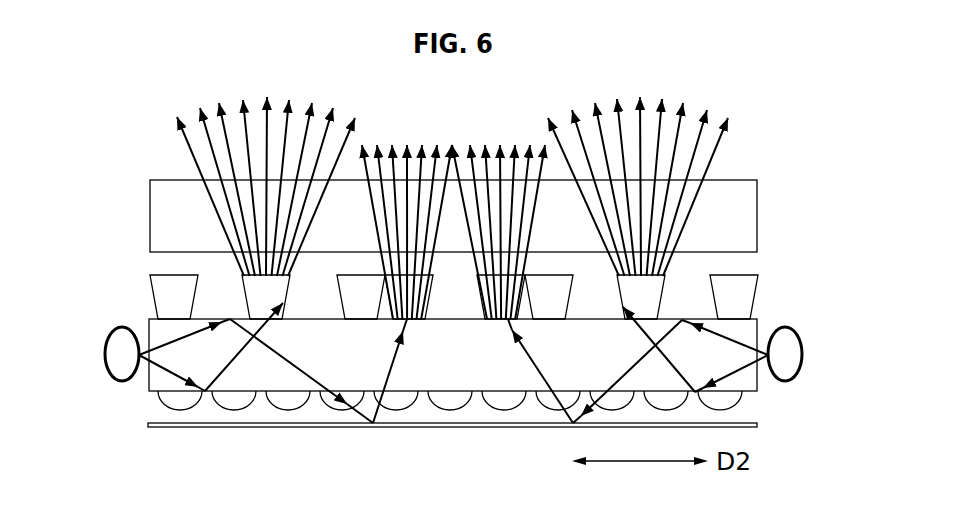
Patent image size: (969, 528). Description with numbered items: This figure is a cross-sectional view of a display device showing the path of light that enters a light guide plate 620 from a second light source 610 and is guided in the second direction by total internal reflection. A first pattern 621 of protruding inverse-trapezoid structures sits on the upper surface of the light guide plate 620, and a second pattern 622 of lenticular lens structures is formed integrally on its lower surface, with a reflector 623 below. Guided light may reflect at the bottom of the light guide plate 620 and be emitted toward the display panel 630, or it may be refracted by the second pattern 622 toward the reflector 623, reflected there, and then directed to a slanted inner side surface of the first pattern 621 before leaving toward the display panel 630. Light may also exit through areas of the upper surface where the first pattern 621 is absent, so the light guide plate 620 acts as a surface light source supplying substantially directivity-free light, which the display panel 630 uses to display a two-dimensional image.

The second light source 610 is at (104, 354).
The light guide plate 620 is at (149, 328).
The first pattern 621 is at (772, 263).
The second pattern 622 is at (290, 410).
The reflector 623 is at (453, 428).
The display panel 630 is at (758, 214).